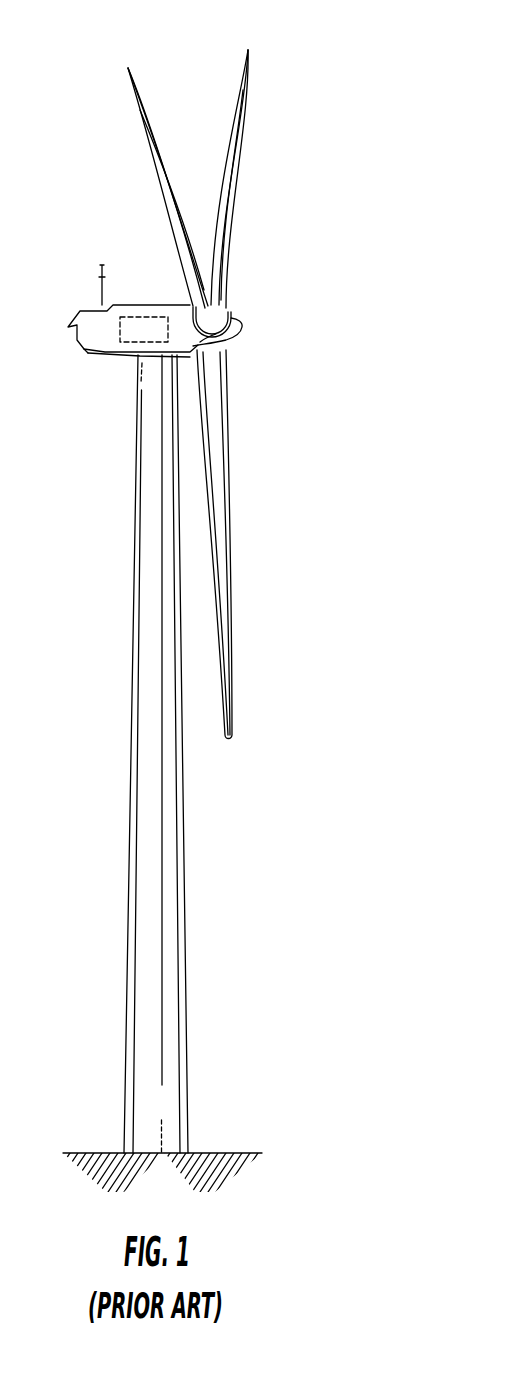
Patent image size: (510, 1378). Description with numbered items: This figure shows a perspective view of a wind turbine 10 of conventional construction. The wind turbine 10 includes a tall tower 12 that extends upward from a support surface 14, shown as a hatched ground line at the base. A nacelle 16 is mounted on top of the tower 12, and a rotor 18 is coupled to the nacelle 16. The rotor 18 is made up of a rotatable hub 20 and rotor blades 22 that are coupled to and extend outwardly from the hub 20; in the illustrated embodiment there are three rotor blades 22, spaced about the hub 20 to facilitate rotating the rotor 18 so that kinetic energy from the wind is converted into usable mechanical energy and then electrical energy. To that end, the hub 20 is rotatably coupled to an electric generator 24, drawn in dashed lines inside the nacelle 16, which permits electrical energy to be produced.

The wind turbine 10 is at (352, 160).
The tower 12 is at (167, 820).
The support surface 14 is at (105, 1153).
The nacelle 16 is at (108, 358).
The rotor 18 is at (252, 300).
The rotatable hub 20 is at (242, 325).
The rotor blade 22 is at (242, 68).
The electric generator 24 is at (138, 314).